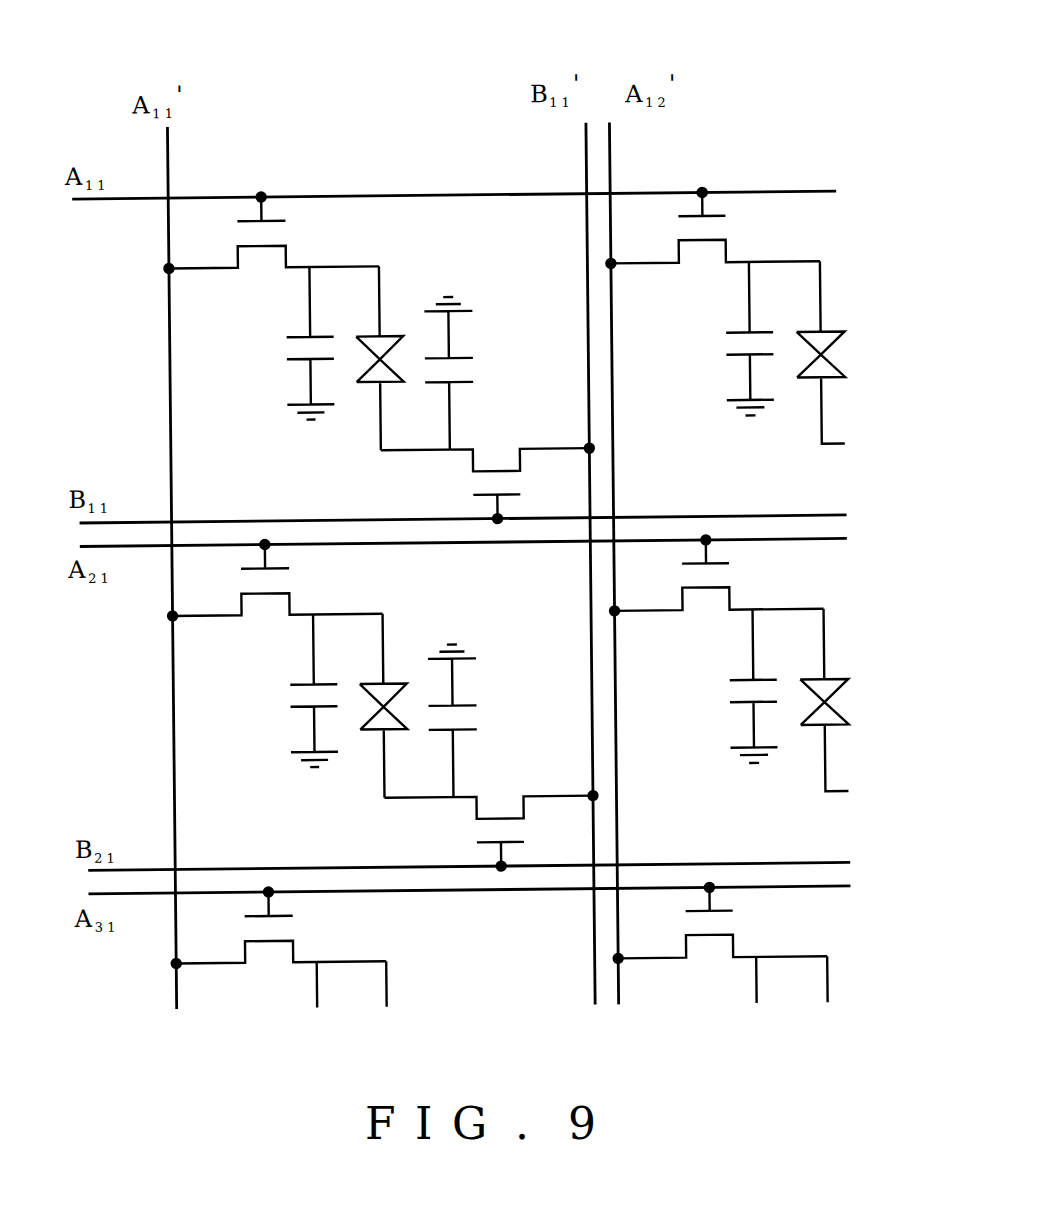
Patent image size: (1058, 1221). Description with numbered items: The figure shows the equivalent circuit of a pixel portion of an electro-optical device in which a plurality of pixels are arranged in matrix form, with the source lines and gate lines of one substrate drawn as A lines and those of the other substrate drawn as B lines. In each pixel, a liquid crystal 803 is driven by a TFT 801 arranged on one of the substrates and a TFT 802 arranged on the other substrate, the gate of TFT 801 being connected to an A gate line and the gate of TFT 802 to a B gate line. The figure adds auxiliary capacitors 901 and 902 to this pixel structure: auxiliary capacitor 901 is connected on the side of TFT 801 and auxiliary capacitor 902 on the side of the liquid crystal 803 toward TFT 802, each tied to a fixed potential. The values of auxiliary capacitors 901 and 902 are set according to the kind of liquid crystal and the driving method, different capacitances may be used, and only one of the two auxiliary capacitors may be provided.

The TFT 801 is at (272, 230).
The TFT 802 is at (499, 486).
The liquid crystal 803 is at (382, 344).
The auxiliary capacitor 901 is at (314, 344).
The auxiliary capacitor 902 is at (455, 368).